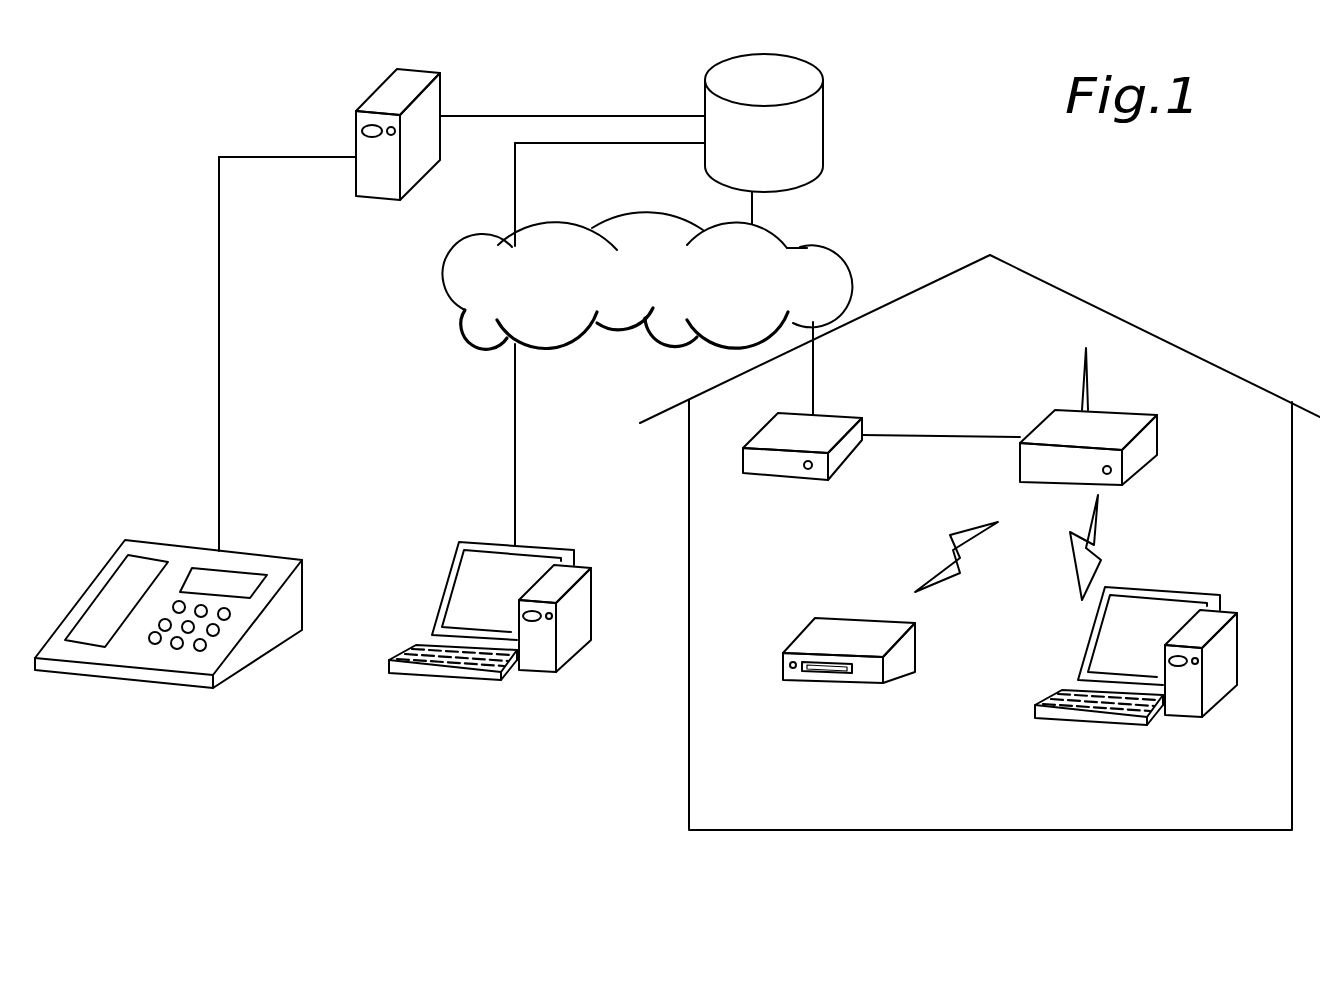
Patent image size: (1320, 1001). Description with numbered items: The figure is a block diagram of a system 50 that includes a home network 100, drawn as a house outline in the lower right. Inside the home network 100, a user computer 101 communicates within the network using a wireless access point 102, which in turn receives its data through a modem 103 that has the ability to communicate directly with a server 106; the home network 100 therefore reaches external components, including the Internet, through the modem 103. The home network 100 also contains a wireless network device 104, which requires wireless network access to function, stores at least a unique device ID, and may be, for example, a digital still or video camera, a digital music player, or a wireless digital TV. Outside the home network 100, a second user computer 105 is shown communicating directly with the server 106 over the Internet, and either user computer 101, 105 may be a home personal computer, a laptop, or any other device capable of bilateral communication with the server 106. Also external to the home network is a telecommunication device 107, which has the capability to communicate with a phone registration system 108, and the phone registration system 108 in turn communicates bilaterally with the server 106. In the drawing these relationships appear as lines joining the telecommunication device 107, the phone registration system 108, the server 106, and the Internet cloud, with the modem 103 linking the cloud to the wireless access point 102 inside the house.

The system 50 is at (1128, 205).
The home network 100 is at (640, 742).
The user computer 101 is at (1052, 724).
The wireless access point 102 is at (1073, 420).
The modem 103 is at (743, 458).
The wireless network device 104 is at (798, 637).
The user computer 105 is at (393, 675).
The server 106 is at (823, 126).
The telecommunication device 107 is at (60, 675).
The phone registration system 108 is at (356, 163).